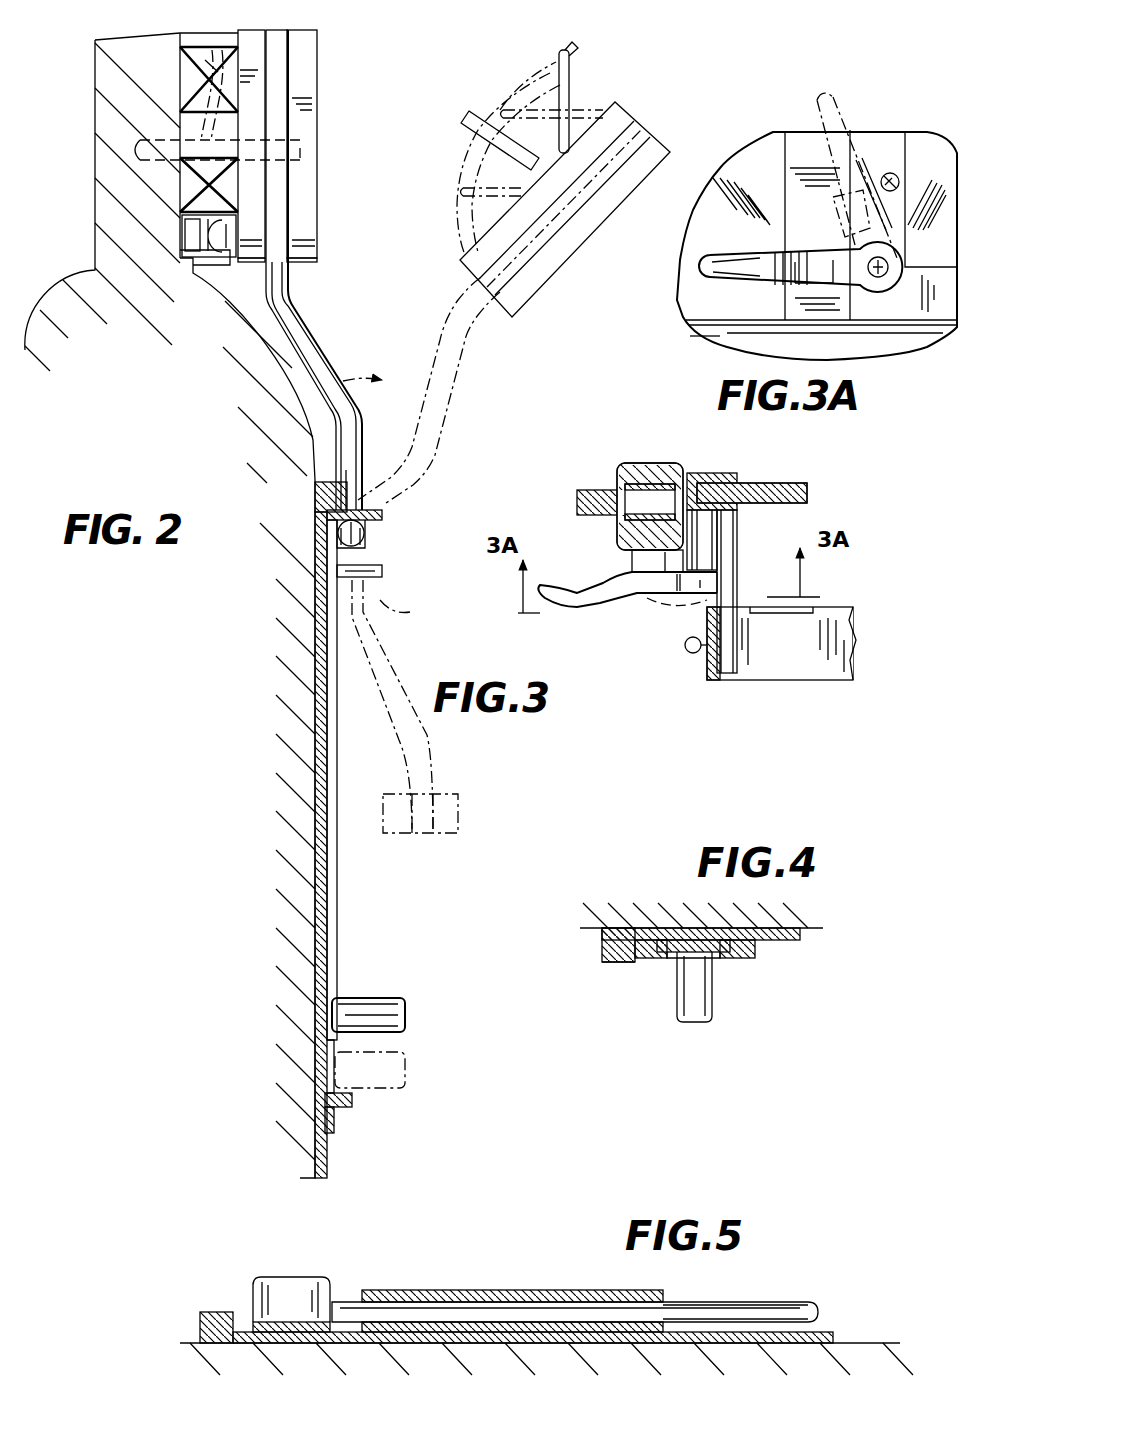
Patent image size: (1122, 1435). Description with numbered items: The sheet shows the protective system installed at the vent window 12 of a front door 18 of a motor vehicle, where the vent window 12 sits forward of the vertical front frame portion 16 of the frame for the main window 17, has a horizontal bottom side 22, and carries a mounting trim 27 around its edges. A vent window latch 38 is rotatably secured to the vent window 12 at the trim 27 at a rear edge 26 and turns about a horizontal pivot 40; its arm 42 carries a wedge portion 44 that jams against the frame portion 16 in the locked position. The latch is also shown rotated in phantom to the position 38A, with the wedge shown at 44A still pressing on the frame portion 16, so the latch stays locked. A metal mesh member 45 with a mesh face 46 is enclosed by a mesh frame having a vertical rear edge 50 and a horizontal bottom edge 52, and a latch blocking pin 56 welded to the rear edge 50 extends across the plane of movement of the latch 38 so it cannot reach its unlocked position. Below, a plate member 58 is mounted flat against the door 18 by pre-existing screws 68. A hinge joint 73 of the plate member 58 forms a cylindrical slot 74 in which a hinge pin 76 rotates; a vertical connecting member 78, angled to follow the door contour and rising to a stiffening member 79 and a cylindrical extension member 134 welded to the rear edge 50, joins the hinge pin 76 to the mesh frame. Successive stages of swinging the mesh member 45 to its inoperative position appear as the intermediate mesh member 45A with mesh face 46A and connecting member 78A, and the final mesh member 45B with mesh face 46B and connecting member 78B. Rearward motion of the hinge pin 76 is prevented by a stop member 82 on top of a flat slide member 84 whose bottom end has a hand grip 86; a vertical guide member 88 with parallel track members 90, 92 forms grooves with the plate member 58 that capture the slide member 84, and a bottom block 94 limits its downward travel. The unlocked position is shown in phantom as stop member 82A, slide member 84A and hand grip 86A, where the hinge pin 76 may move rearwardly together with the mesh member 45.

In FIG. 3A, the vent window 12 is at (940, 185).
In FIG. 3, the vent window 12 is at (808, 485).
In FIG. 3A, the front frame portion 16 is at (800, 132).
In FIG. 3, the front frame portion 16 is at (652, 464).
In FIG. 3A, the main window 17 is at (750, 160).
In FIG. 3, the main window 17 is at (598, 490).
In FIG. 2, the front door 18 is at (239, 787).
In FIG. 4, the front door 18 is at (648, 913).
In FIG. 3A, the horizontal bottom side 22 is at (942, 333).
In FIG. 2, the rear edge 26 is at (96, 118).
In FIG. 3A, the rear edge 26 is at (840, 325).
In FIG. 3, the mounting trim 27 is at (700, 476).
In FIG. 2, the vent window latch 38 is at (211, 50).
In FIG. 3A, the vent window latch 38 is at (700, 247).
In FIG. 3, the vent window latch 38 is at (627, 613).
In FIG. 3A, the latch rotated position 38A is at (824, 100).
In FIG. 2, the pivot 40 is at (199, 275).
In FIG. 3A, the pivot 40 is at (882, 283).
In FIG. 3, the pivot 40 is at (728, 520).
In FIG. 3A, the arm 42 is at (756, 280).
In FIG. 3, the arm 42 is at (578, 638).
In FIG. 3A, the wedge portion 44 is at (790, 240).
In FIG. 3, the wedge portion 44 is at (630, 560).
In FIG. 3A, the hub released position 44A is at (905, 160).
In FIG. 2, the metal mesh member 45 is at (308, 146).
In FIG. 2, the mesh member intermediate position 45A is at (462, 264).
In FIG. 2, the mesh member inoperative position 45B is at (461, 816).
In FIG. 2, the mesh face 46 is at (200, 46).
In FIG. 2, the mesh face intermediate position 46A is at (470, 150).
In FIG. 2, the mesh face inoperative position 46B is at (455, 835).
In FIG. 2, the vertical rear edge 50 is at (318, 72).
In FIG. 3A, the vertical rear edge 50 is at (889, 172).
In FIG. 3, the horizontal bottom edge 52 is at (812, 682).
In FIG. 2, the latch blocking pin 56 is at (138, 142).
In FIG. 2, the plate member 58 is at (312, 927).
In FIG. 4, the plate member 58 is at (692, 934).
In FIG. 5, the plate member 58 is at (840, 1333).
In FIG. 2, the screws 68 is at (318, 488).
In FIG. 5, the hinge joint 73 is at (490, 1291).
In FIG. 2, the cylindrical slot 74 is at (362, 540).
In FIG. 5, the cylindrical slot 74 is at (590, 1303).
In FIG. 2, the hinge pin 76 is at (338, 535).
In FIG. 5, the hinge pin 76 is at (755, 1302).
In FIG. 2, the connecting member 78 is at (298, 324).
In FIG. 2, the support rod tilted position 78A is at (452, 400).
In FIG. 2, the support rod lowered position 78B is at (358, 625).
In FIG. 2, the stiffening member 79 is at (280, 32).
In FIG. 2, the stop member 82 is at (384, 520).
In FIG. 5, the stop member 82 is at (302, 1278).
In FIG. 2, the stop member unlocked position 82A is at (382, 577).
In FIG. 2, the slide member 84 is at (324, 970).
In FIG. 4, the slide member 84 is at (728, 960).
In FIG. 5, the slide member 84 is at (268, 1322).
In FIG. 2, the slide member unlocked position 84A is at (326, 1059).
In FIG. 2, the hand grip 86 is at (408, 1024).
In FIG. 4, the hand grip 86 is at (684, 1003).
In FIG. 2, the hand grip unlocked position 86A is at (408, 1077).
In FIG. 4, the guide member 88 is at (640, 1010).
In FIG. 4, the track member 90 is at (650, 960).
In FIG. 4, the track member 92 is at (757, 956).
In FIG. 2, the bottom block 94 is at (352, 1102).
In FIG. 2, the extension member 134 is at (275, 135).